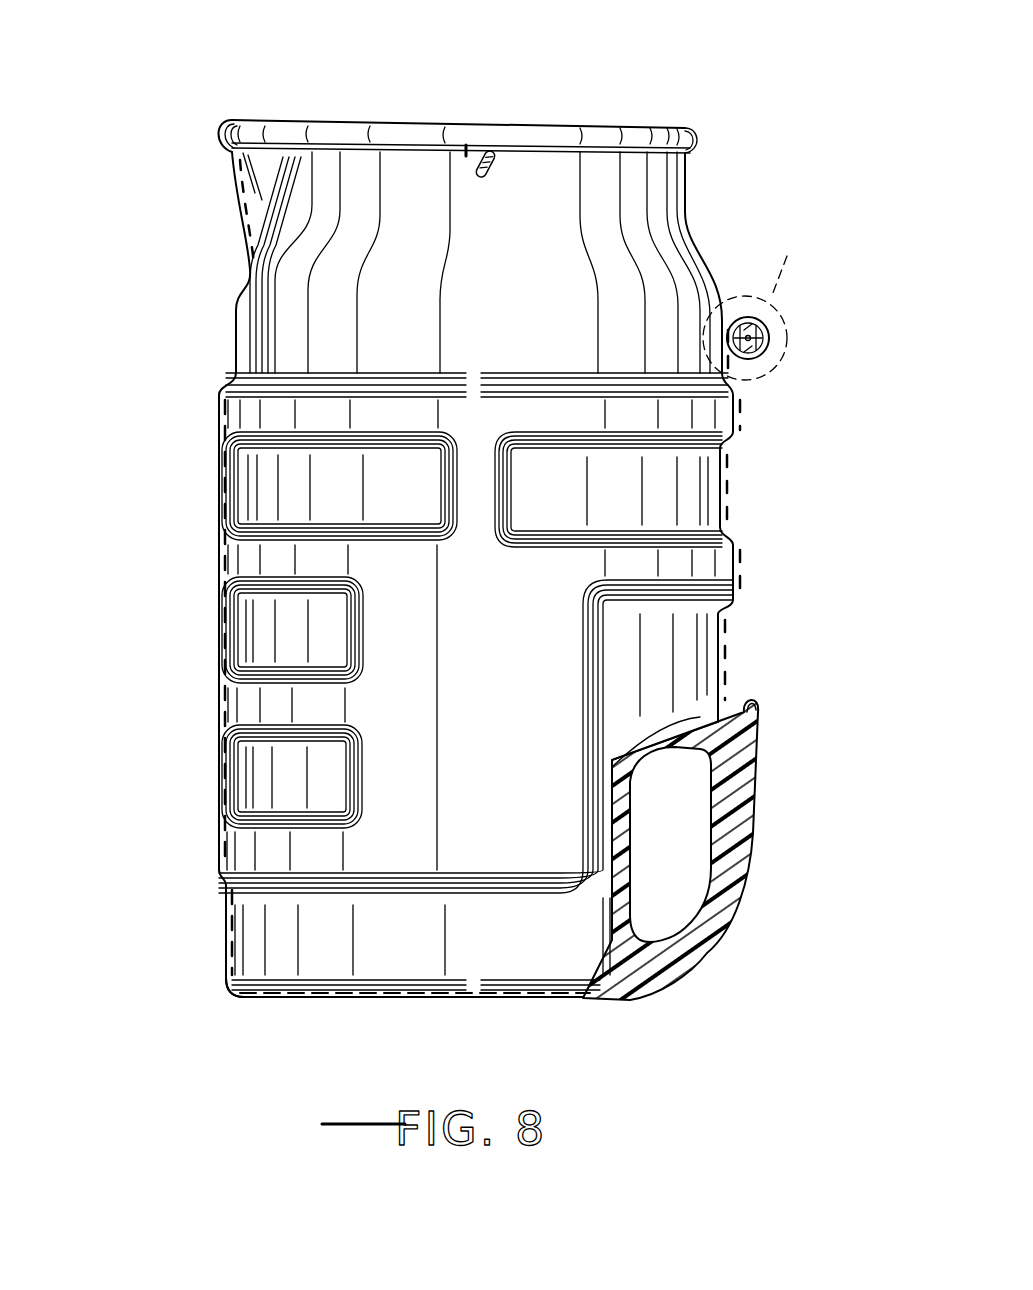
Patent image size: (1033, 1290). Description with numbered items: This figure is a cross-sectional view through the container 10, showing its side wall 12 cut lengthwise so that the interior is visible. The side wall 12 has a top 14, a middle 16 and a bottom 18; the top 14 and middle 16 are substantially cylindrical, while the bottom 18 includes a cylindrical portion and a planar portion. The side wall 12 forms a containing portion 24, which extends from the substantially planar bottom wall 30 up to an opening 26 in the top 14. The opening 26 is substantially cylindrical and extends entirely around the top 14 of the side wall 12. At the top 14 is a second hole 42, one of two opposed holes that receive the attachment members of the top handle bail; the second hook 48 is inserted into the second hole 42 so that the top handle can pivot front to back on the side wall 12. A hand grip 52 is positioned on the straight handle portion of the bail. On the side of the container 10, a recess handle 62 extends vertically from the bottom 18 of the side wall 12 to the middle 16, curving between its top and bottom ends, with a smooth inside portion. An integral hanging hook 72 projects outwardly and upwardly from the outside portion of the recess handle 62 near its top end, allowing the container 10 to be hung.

The container 10 is at (592, 96).
The side wall 12 is at (724, 470).
The top 14 is at (216, 131).
The middle 16 is at (218, 625).
The bottom 18 is at (226, 998).
The containing portion 24 is at (320, 338).
The opening 26 is at (228, 120).
The bottom wall 30 is at (330, 1000).
The second hole 42 is at (467, 160).
The second hook 48 is at (493, 162).
The hand grip 52 is at (762, 360).
The recess handle 62 is at (754, 820).
The hanging hook 72 is at (758, 718).